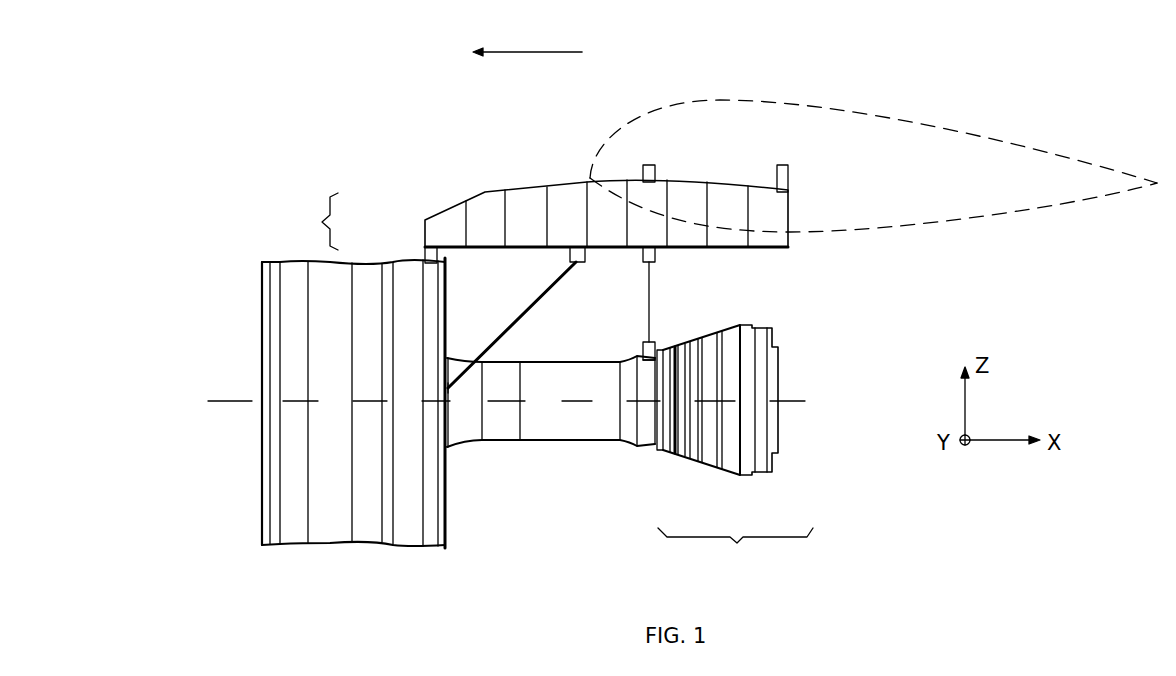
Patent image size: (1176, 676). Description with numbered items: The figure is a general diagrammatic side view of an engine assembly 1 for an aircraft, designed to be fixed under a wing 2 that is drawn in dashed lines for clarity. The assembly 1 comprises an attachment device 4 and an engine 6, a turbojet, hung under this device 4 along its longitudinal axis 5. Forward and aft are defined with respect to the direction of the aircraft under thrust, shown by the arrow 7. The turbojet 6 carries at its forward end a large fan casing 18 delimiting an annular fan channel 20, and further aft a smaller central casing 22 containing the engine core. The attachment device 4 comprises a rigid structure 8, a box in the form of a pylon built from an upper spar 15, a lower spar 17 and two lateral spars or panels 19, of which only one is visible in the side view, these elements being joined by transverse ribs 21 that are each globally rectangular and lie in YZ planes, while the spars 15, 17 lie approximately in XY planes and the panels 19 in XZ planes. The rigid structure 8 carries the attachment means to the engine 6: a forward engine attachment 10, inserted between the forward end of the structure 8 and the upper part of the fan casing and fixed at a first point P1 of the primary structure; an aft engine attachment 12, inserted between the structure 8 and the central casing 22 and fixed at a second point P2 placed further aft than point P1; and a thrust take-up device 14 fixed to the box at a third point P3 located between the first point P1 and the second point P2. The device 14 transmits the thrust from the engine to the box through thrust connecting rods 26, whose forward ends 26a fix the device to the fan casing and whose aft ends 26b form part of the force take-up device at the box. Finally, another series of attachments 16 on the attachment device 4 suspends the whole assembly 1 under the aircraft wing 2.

The engine assembly 1 is at (306, 138).
The wing 2 is at (960, 128).
The attachment device 4 is at (559, 381).
The longitudinal axis of engine 5 is at (222, 400).
The engine 6 is at (428, 552).
The arrow 7 is at (528, 52).
The rigid structure 8 is at (782, 262).
The forward engine attachment 10 is at (412, 256).
The aft engine attachment 12 is at (653, 272).
The thrust take-up device 14 is at (612, 250).
The upper spar 15 is at (723, 230).
The attachments 16 is at (780, 155).
The lower spar 17 is at (638, 303).
The fan cowl 18 is at (305, 533).
The lateral spar/panel 19 is at (482, 237).
The annular fan channel 20 is at (417, 304).
The transverse ribs 21 is at (498, 222).
The central casing 22 is at (513, 440).
The thrust connecting rods 26 is at (540, 302).
The forward ends of the connecting rods 26a is at (453, 393).
The aft ends of the connecting rods 26b is at (583, 275).
The first point P1 is at (426, 246).
The second point P2 is at (575, 246).
The third point P3 is at (538, 228).